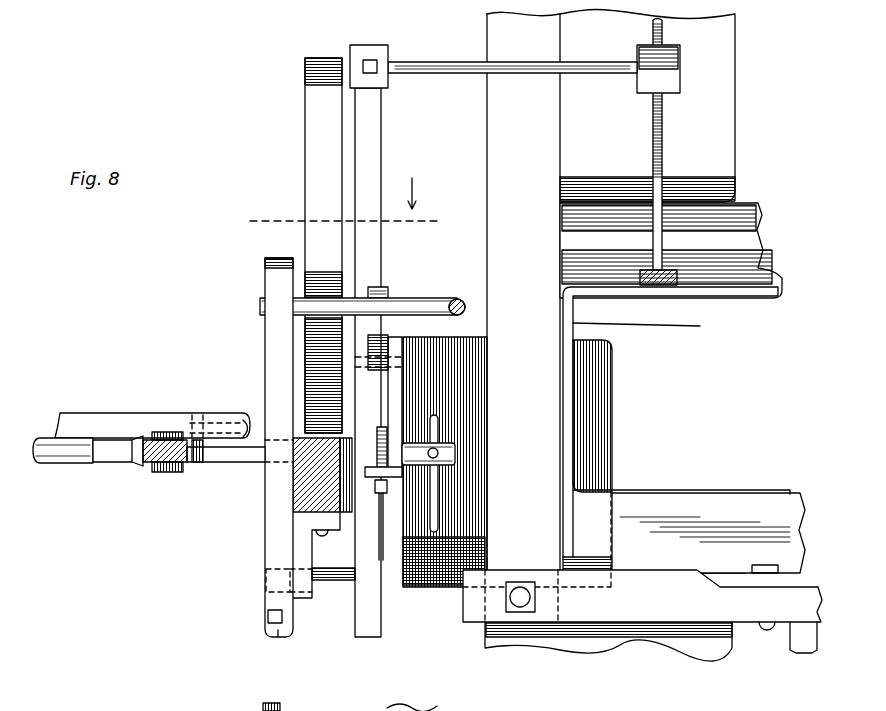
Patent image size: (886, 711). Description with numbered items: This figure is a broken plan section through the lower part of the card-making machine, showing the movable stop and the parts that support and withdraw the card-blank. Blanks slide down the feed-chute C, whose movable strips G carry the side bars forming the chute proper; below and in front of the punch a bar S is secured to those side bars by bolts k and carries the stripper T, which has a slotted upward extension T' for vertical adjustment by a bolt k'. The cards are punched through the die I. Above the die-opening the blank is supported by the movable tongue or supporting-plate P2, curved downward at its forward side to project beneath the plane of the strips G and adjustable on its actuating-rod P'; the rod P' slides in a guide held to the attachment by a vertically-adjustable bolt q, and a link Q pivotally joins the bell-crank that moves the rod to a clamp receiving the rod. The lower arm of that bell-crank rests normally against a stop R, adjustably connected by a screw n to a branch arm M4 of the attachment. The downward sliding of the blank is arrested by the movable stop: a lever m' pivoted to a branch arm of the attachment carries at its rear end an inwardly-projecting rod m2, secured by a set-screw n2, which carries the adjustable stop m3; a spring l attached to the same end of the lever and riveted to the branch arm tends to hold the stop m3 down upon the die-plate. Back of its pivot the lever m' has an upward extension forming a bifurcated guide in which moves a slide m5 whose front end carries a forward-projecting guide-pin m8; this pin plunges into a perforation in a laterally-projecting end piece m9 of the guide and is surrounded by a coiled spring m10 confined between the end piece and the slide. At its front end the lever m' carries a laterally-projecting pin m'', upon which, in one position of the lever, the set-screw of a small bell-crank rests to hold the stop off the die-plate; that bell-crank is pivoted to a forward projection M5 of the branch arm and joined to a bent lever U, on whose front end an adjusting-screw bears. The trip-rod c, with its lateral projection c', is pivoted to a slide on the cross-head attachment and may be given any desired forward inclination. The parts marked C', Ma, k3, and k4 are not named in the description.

The feed-chute C is at (624, 106).
The frame column C' is at (523, 292).
The die I is at (770, 252).
The adjustable stop m3 is at (665, 263).
The inwardly-projecting rod m2 is at (462, 74).
The set-screw n2 is at (378, 65).
The slotted upward extension T' is at (670, 432).
The stripper T is at (689, 448).
The movable tongue or supporting-plate P2 is at (518, 462).
The lever m' is at (392, 362).
The slide m5 is at (384, 286).
The coiled spring m10 is at (388, 443).
The laterally-projecting end piece m9 is at (388, 481).
The forward-projecting guide-pin m8 is at (382, 497).
The spring l is at (307, 148).
The lateral projection c' is at (358, 294).
The trip-rod c is at (457, 293).
The vertically-adjustable bolt q is at (338, 205).
The block Ma is at (303, 490).
The forward projection M5 is at (300, 545).
The laterally-projecting pin m'' is at (333, 596).
The bent lever U is at (268, 279).
The slot k4 is at (267, 577).
The pin k3 is at (268, 617).
The bolt k' is at (267, 646).
The branch arm M4 is at (133, 407).
The screw n is at (247, 418).
The actuating-rod P' is at (163, 463).
The link Q is at (117, 464).
The stop R is at (197, 463).
The bar S is at (642, 557).
The bolts k is at (529, 599).
The movable strips G is at (803, 650).